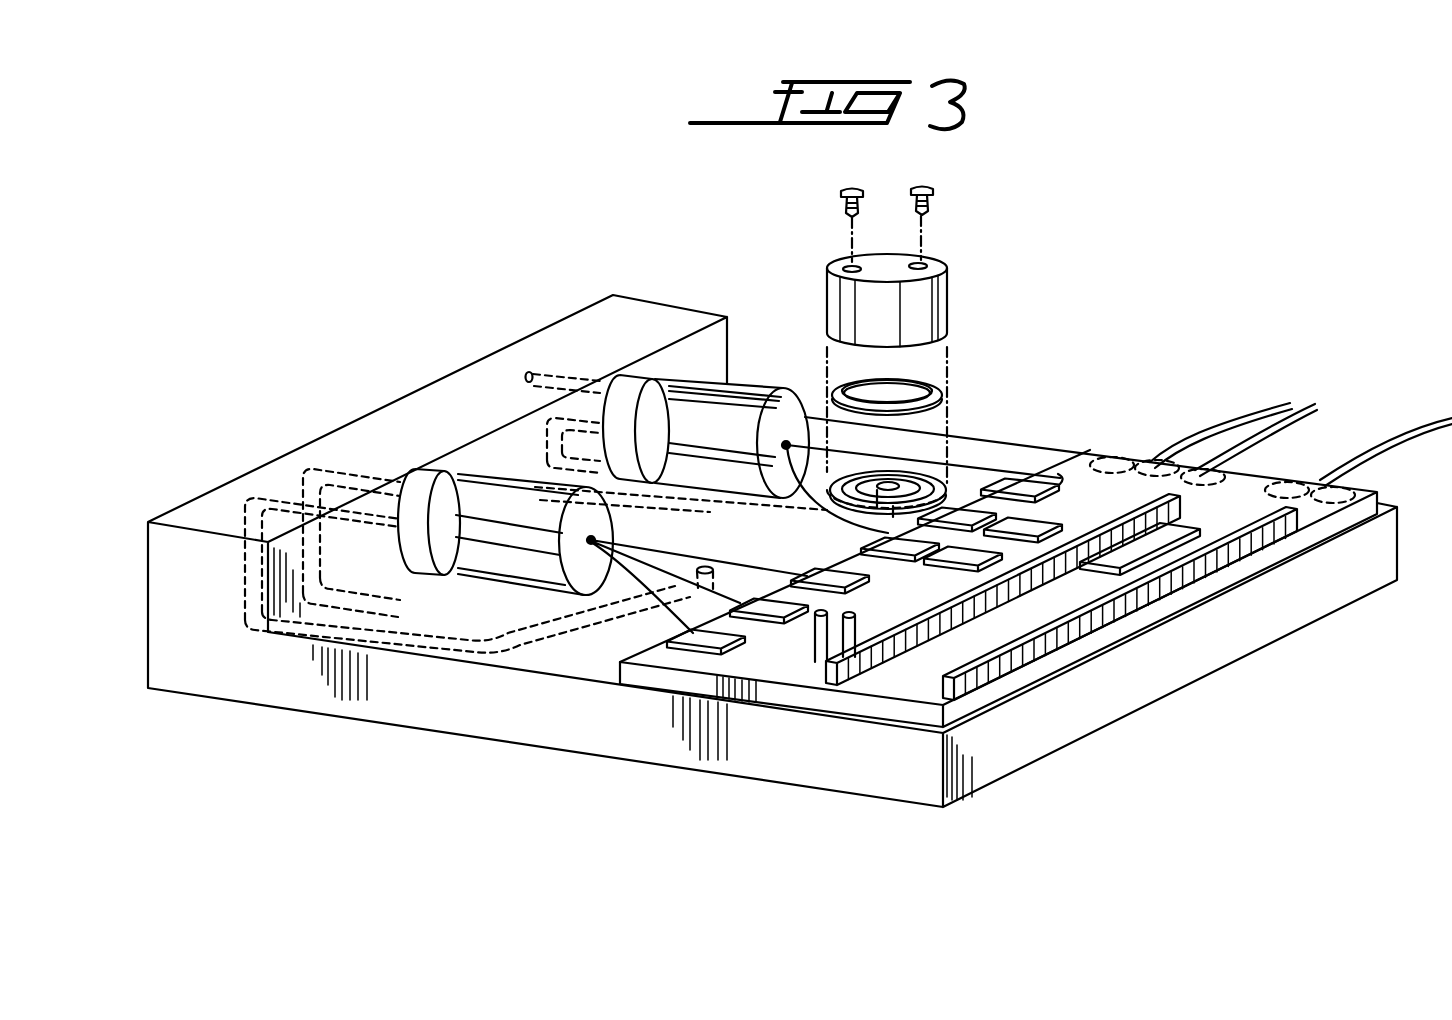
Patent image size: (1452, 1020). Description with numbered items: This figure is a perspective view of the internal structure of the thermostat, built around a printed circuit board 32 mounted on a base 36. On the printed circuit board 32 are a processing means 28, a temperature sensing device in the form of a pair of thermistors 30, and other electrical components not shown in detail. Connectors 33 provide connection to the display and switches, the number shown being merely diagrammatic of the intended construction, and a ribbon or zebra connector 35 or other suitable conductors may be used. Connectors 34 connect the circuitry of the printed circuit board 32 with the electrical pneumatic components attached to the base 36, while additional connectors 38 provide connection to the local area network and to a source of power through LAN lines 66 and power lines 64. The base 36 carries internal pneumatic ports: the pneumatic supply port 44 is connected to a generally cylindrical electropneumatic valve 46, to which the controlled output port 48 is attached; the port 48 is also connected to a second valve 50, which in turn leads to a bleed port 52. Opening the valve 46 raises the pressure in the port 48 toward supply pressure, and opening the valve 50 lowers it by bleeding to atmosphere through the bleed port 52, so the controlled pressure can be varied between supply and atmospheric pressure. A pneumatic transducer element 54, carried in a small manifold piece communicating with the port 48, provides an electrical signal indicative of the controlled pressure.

The processing means 28 is at (1178, 528).
The thermistors 30 is at (843, 646).
The printed circuit board 32 is at (936, 684).
The connectors 33 is at (973, 553).
The connectors 34 is at (885, 567).
The ribbon or zebra connector 35 is at (946, 696).
The base 36 is at (403, 708).
The connectors 38 is at (1337, 478).
The pneumatic supply port 44 is at (690, 597).
The electropneumatic valve 46 is at (510, 578).
The pneumatic port 48 is at (545, 438).
The second valve 50 is at (747, 381).
The bleed port 52 is at (543, 370).
The pneumatic transducer element 54 is at (940, 296).
The power lines 64 is at (1412, 437).
The LAN lines 66 is at (1300, 414).